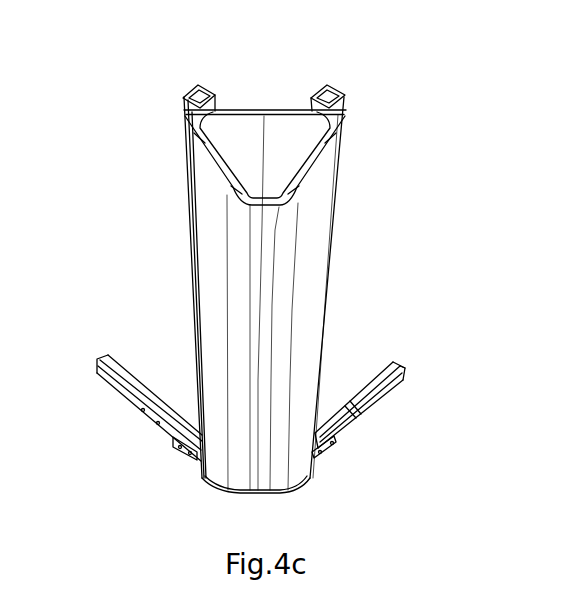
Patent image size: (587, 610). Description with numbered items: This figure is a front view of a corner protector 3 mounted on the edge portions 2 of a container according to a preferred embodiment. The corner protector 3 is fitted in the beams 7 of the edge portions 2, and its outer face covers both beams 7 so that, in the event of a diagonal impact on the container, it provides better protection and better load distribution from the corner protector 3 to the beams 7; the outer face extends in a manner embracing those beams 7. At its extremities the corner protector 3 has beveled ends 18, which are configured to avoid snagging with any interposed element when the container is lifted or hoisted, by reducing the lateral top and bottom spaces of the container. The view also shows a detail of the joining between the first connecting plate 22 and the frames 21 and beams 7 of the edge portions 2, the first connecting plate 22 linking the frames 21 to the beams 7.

The edge portions 2 is at (114, 262).
The corner protector 3 is at (367, 210).
The beams 7 is at (185, 101).
The beveled ends 18 is at (293, 150).
The frames 21 is at (125, 375).
The first connecting plate 22 is at (325, 448).